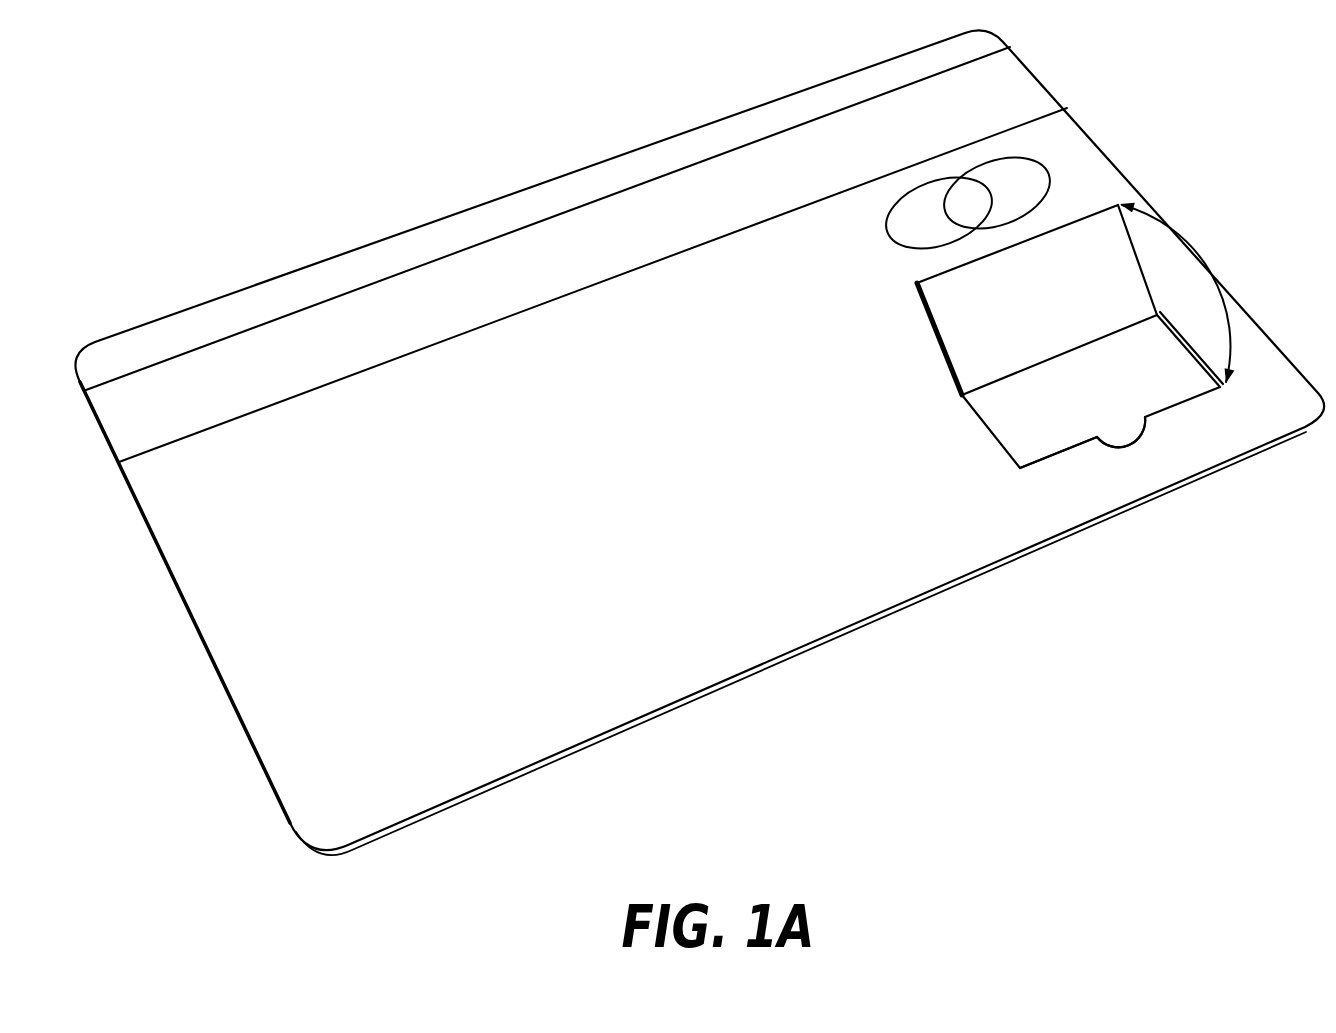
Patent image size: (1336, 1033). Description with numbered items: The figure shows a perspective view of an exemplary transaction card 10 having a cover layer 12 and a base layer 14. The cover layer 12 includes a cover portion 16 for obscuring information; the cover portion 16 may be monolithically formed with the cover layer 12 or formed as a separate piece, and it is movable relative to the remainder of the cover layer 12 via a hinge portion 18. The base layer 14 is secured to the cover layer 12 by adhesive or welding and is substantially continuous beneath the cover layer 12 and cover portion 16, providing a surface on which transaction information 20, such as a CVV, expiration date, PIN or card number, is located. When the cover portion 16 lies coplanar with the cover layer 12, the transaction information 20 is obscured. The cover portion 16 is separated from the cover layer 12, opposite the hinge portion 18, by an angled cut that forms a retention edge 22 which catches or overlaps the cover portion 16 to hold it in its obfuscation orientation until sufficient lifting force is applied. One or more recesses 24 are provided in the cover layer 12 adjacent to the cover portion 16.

The transaction card 10 is at (363, 196).
The cover layer 12 is at (822, 513).
The base layer 14 is at (1013, 438).
The cover portion 16 is at (963, 318).
The hinge portion 18 is at (1113, 335).
The transaction information 20 is at (1106, 408).
The retention edge 22 is at (1057, 453).
The recess 24 is at (1127, 445).